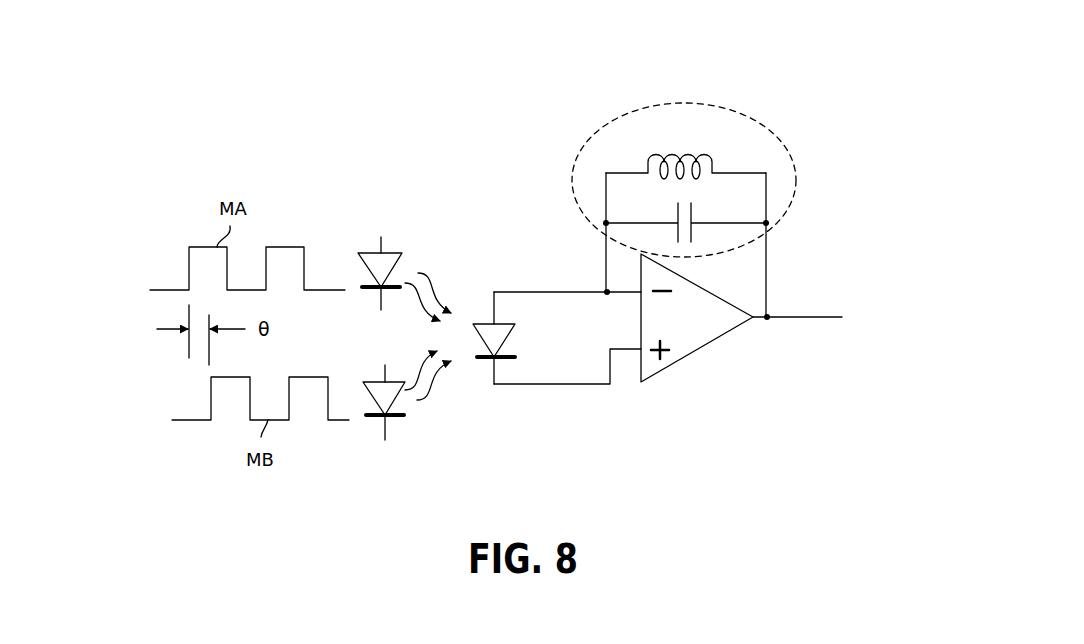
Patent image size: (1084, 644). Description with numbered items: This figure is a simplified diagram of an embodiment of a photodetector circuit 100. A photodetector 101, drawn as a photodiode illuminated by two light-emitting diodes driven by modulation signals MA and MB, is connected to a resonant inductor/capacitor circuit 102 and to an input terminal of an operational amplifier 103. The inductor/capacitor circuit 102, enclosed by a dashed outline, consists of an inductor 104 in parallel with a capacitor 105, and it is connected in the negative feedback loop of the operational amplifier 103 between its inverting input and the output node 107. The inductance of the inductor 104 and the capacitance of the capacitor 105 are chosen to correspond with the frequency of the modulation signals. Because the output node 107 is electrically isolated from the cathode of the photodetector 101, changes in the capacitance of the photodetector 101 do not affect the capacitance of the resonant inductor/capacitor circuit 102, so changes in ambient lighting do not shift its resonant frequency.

The photodetector circuit 100 is at (797, 112).
The photodetector 101 is at (512, 335).
The resonant inductor/capacitor circuit 102 is at (797, 167).
The operational amplifier 103 is at (708, 330).
The inductor 104 is at (693, 158).
The capacitor 105 is at (693, 207).
The output node 107 is at (797, 320).